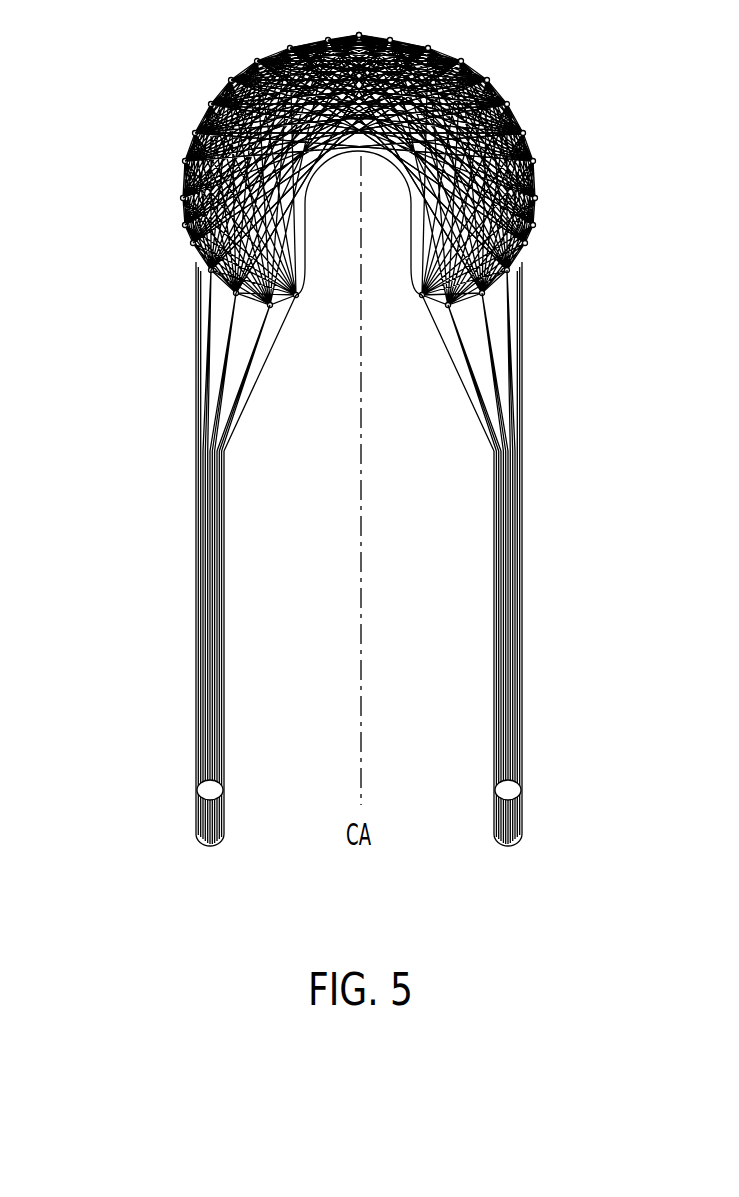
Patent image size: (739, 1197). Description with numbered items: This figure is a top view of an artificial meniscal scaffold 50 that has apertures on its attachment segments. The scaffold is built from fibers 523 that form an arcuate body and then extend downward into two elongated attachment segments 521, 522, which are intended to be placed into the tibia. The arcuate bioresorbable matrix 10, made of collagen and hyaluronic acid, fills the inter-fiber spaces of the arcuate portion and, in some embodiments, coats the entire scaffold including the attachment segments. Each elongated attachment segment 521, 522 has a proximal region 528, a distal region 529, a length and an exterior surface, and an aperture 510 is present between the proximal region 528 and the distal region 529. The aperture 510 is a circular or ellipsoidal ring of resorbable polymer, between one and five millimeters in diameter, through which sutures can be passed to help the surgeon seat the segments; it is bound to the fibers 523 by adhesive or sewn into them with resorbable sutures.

The artificial meniscal scaffold 50 is at (92, 551).
The fibers 523 is at (160, 158).
The arcuate bioresorbable matrix 10 is at (349, 146).
The elongated attachment segment 521 is at (168, 665).
The elongated attachment segment 522 is at (462, 636).
The proximal region 528 is at (224, 445).
The distal region 529 is at (222, 800).
The aperture 510 is at (190, 780).